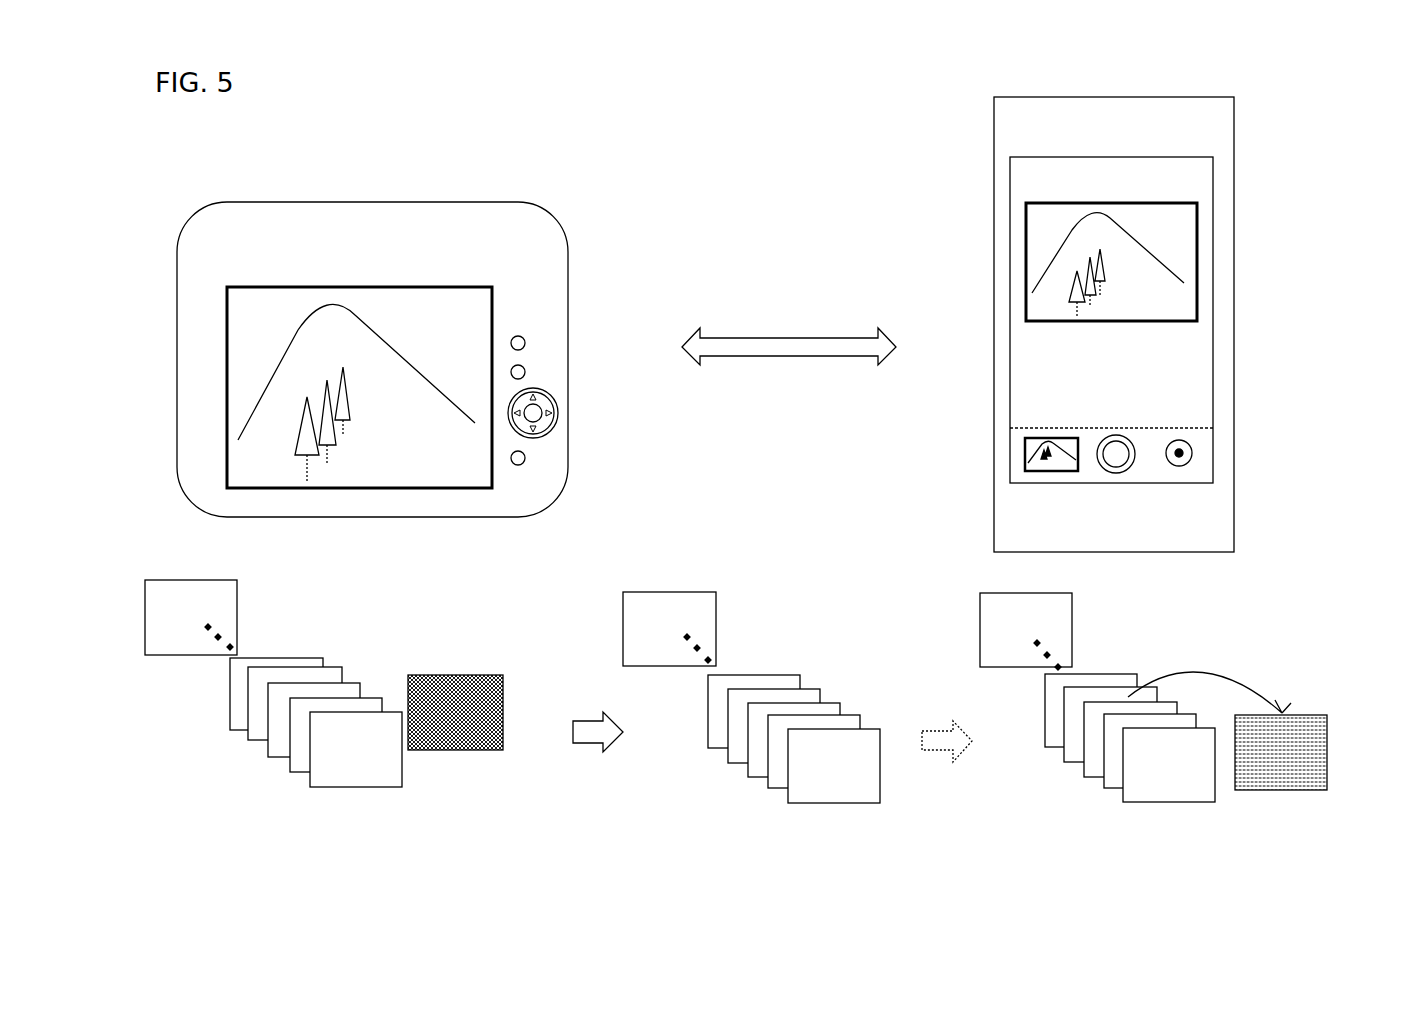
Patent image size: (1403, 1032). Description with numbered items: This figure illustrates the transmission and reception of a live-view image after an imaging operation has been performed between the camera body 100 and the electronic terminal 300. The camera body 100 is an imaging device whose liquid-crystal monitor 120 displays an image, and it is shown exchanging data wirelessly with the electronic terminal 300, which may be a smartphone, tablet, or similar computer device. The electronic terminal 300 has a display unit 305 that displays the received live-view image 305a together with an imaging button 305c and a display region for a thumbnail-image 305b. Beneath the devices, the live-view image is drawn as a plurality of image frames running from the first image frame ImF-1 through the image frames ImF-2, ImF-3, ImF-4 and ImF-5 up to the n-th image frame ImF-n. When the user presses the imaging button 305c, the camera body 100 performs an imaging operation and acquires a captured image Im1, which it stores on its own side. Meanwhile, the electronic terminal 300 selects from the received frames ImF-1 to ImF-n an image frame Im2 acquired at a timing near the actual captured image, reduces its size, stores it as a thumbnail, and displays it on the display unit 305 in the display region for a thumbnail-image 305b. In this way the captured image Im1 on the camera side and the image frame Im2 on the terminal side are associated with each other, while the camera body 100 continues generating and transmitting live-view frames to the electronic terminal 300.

The camera body 100 is at (545, 225).
The liquid-crystal monitor 120 is at (442, 303).
The electronic terminal 300 is at (1233, 127).
The display unit 305 is at (1112, 157).
The live-view image 305a is at (1133, 207).
The display region for a thumbnail-image 305b is at (1027, 465).
The imaging button 305c is at (1108, 472).
The image frame ImF-n is at (225, 608).
The image frame ImF-5 is at (310, 658).
The image frame ImF-4 is at (252, 730).
The image frame ImF-3 is at (278, 757).
The image frame ImF-2 is at (303, 773).
The image frame ImF-1 is at (393, 778).
The captured image Im1 is at (478, 682).
The image frame Im2 is at (1297, 718).